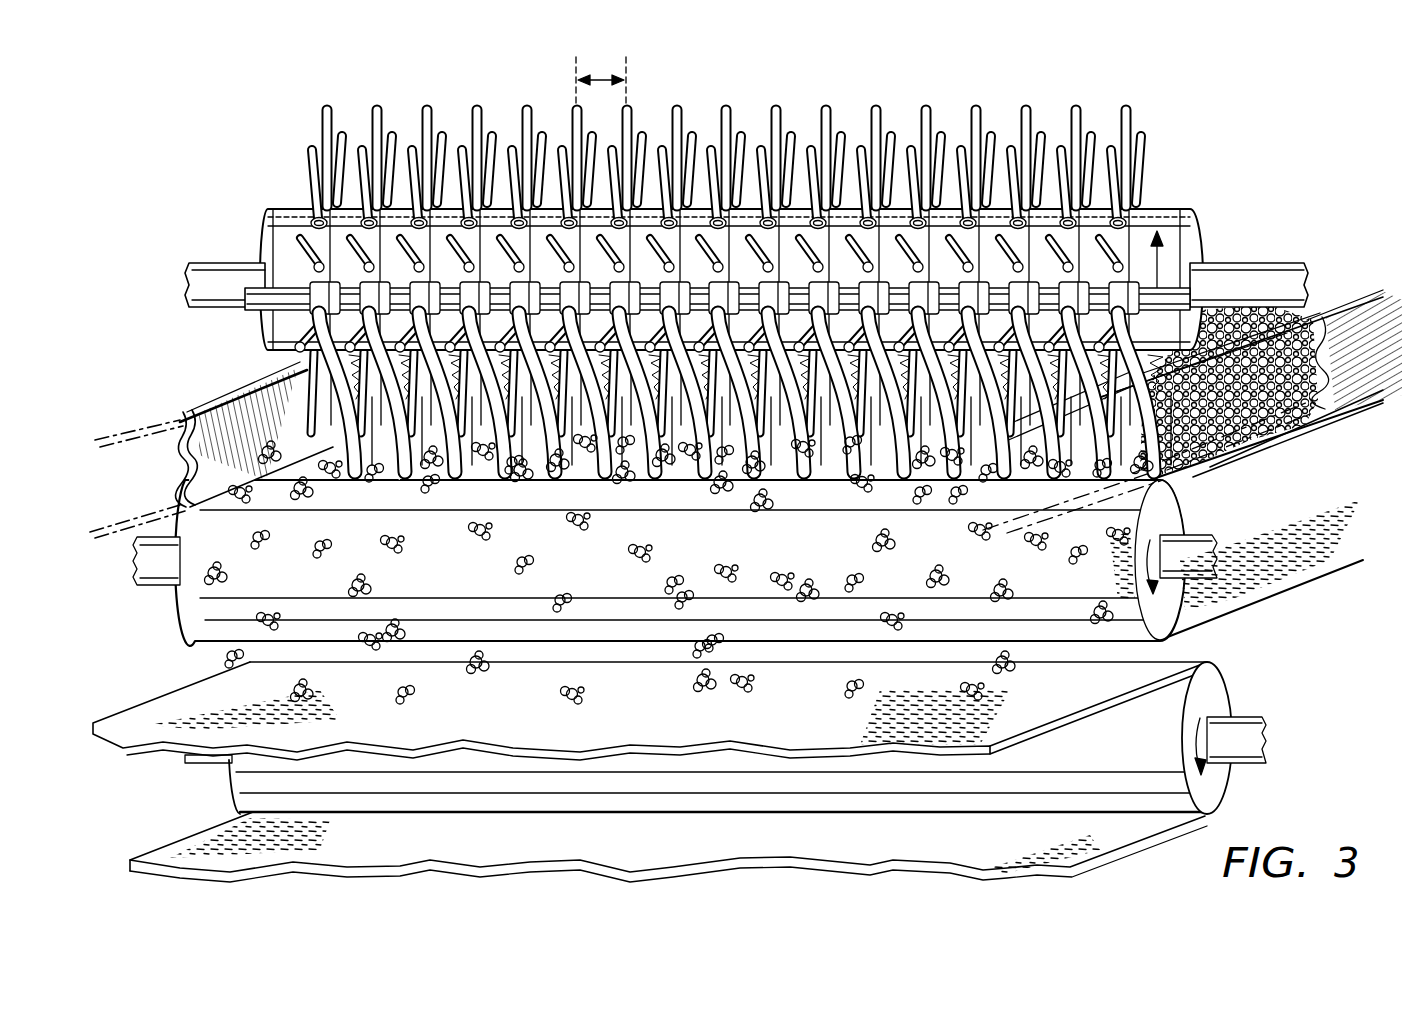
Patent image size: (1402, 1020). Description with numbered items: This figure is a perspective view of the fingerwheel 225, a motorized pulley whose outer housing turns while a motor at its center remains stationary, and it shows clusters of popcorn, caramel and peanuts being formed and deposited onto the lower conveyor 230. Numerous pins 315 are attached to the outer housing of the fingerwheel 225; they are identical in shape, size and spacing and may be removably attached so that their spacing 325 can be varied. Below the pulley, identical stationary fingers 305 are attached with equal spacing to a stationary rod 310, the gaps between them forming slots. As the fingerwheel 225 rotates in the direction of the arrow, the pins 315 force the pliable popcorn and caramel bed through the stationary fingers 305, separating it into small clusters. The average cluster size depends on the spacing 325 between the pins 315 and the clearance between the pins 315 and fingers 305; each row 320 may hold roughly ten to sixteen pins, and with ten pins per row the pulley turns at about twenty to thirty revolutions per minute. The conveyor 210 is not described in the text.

The conveyor belt roller 210 is at (1262, 592).
The fingerwheel 225 is at (1197, 232).
The lower conveyor 230 is at (1077, 712).
The stationary fingers 305 is at (327, 332).
The stationary rod 310 is at (262, 294).
The pins 315 is at (1077, 110).
The row 320 is at (347, 100).
The spacing 325 is at (606, 78).